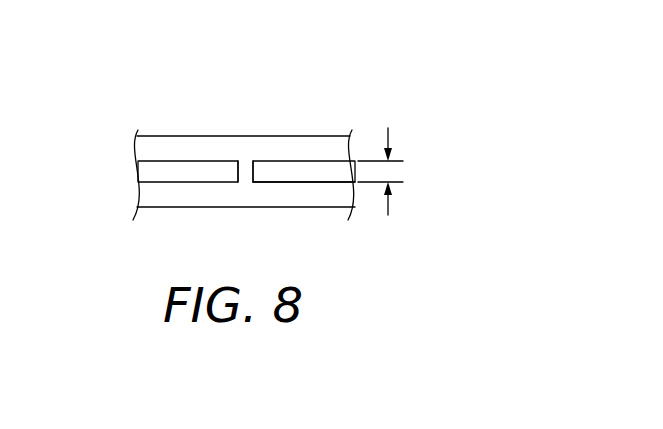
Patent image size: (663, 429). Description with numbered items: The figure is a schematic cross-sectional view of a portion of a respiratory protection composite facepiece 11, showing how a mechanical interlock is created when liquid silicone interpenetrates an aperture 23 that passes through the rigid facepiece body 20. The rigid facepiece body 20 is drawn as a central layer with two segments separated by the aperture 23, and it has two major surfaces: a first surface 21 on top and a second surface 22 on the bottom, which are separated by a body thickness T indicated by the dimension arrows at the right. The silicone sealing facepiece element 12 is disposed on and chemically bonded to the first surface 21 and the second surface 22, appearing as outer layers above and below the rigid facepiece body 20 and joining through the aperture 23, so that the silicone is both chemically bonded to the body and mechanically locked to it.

The respiratory protection composite facepiece 11 is at (362, 63).
The silicone sealing facepiece element 12 is at (163, 136).
The rigid facepiece body 20 is at (195, 168).
The first surface 21 is at (307, 162).
The second surface 22 is at (275, 182).
The aperture 23 is at (247, 146).
The body thickness T is at (389, 129).